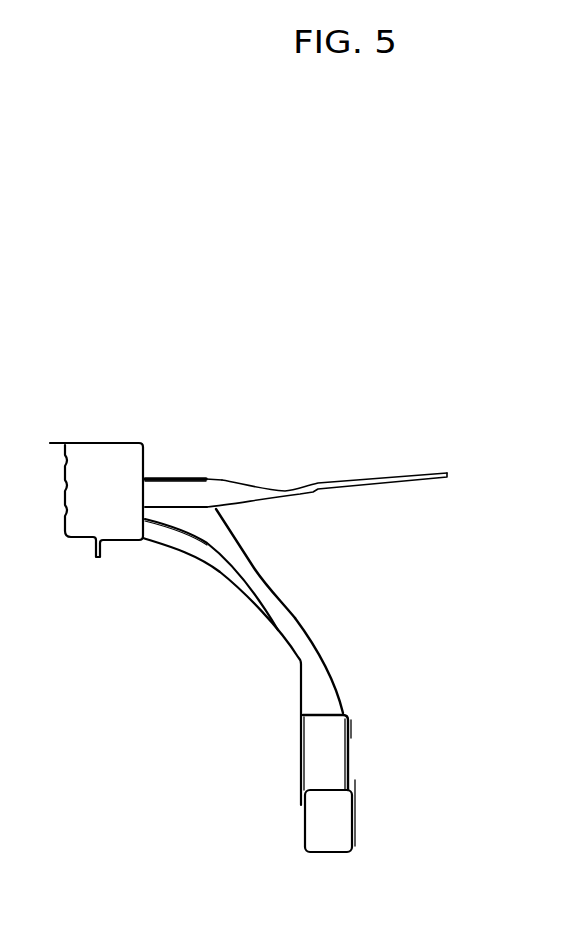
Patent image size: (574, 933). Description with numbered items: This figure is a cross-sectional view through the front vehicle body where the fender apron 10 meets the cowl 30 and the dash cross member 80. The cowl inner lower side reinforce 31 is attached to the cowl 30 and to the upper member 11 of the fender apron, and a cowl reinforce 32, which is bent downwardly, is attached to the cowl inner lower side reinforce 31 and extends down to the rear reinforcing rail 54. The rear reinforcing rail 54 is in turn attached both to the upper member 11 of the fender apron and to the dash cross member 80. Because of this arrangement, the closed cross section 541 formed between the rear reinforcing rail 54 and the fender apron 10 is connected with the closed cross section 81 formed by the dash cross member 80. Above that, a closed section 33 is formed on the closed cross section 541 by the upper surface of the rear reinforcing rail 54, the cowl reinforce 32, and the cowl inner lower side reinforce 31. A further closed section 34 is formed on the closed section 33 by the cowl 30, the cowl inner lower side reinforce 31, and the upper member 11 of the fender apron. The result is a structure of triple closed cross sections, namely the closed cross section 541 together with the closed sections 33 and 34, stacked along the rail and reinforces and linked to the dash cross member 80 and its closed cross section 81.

The fender apron 10 is at (236, 590).
The upper member of the fender apron 11 is at (73, 542).
The cowl 30 is at (155, 478).
The cowl inner lower side reinforce 31 is at (206, 500).
The cowl reinforce 32 is at (235, 538).
The closed section 33 is at (186, 515).
The closed section 34 is at (168, 493).
The rear reinforcing rail 54 is at (332, 673).
The closed cross section 541 is at (161, 532).
The dash cross member 80 is at (350, 758).
The closed cross section 81 is at (318, 755).